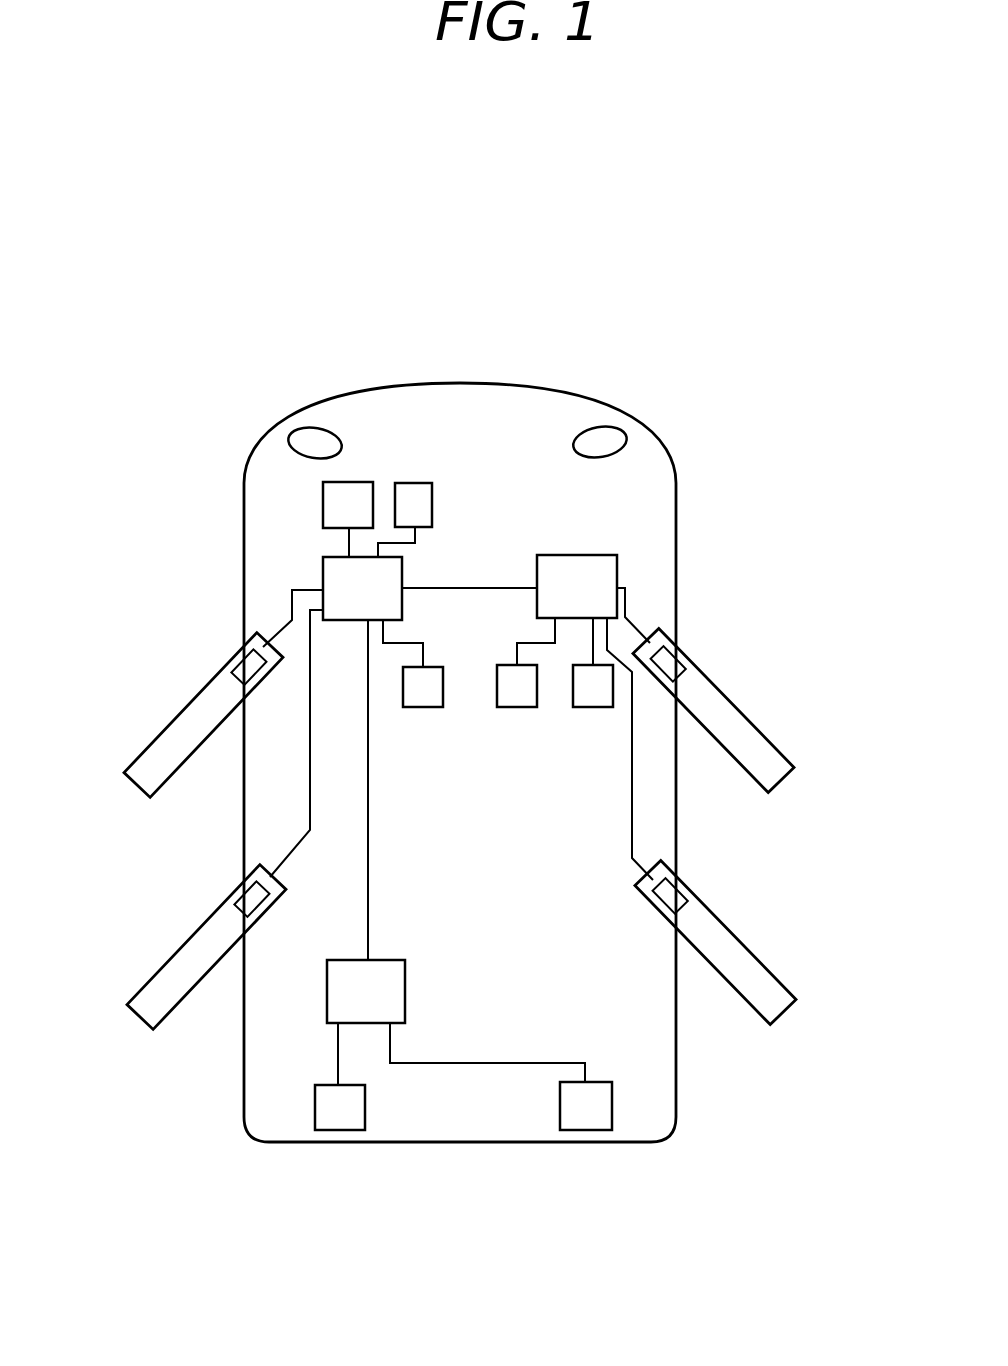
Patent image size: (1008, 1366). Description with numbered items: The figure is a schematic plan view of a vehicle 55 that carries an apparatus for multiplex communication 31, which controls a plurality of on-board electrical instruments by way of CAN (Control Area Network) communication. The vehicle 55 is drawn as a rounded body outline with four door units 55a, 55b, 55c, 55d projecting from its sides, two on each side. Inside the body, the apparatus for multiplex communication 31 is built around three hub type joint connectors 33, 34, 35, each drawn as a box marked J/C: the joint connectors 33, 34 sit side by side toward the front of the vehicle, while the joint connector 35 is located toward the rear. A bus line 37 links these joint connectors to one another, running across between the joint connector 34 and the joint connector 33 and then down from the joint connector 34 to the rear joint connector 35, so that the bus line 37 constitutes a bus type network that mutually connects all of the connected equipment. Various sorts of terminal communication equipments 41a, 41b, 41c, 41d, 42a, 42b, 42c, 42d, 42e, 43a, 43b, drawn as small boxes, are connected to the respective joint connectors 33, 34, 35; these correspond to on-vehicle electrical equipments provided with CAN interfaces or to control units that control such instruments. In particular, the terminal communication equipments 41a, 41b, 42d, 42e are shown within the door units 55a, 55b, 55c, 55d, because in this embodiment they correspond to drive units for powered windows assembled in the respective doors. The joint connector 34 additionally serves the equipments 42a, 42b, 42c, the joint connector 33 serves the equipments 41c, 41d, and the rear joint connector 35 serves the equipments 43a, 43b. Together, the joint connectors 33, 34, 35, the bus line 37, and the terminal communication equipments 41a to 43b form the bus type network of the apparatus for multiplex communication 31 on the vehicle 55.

The apparatus for multiplex communication 31 is at (632, 818).
The hub type joint connector 33 is at (630, 565).
The hub type joint connector 34 is at (323, 570).
The hub type joint connector 35 is at (310, 993).
The bus line 37 is at (512, 588).
The terminal communication equipment 41a is at (677, 887).
The terminal communication equipment 41b is at (675, 658).
The terminal communication equipment 41c is at (596, 693).
The terminal communication equipment 41d is at (520, 693).
The terminal communication equipment 42a is at (426, 693).
The terminal communication equipment 42b is at (422, 503).
The terminal communication equipment 42c is at (349, 503).
The terminal communication equipment 42d is at (237, 662).
The terminal communication equipment 42e is at (240, 894).
The terminal communication equipment 43a is at (340, 1115).
The terminal communication equipment 43b is at (590, 1115).
The vehicle 55 is at (645, 428).
The door unit 55a is at (770, 737).
The door unit 55b is at (770, 970).
The door unit 55c is at (150, 975).
The door unit 55d is at (150, 742).